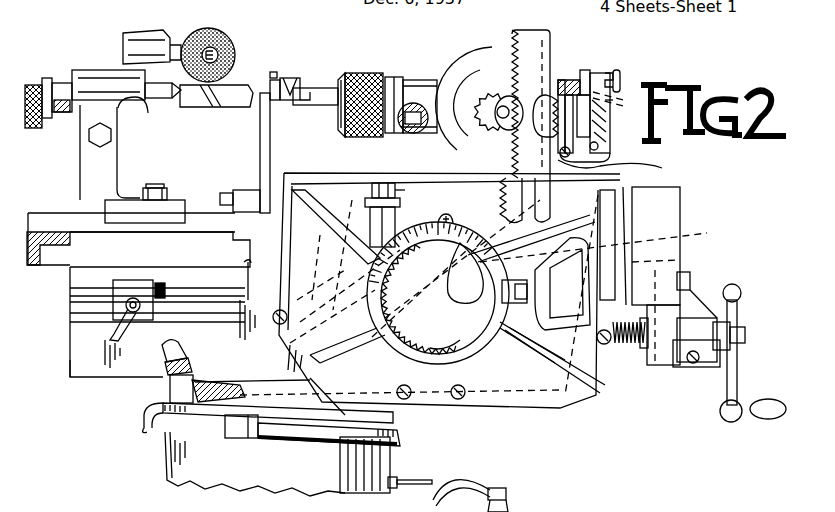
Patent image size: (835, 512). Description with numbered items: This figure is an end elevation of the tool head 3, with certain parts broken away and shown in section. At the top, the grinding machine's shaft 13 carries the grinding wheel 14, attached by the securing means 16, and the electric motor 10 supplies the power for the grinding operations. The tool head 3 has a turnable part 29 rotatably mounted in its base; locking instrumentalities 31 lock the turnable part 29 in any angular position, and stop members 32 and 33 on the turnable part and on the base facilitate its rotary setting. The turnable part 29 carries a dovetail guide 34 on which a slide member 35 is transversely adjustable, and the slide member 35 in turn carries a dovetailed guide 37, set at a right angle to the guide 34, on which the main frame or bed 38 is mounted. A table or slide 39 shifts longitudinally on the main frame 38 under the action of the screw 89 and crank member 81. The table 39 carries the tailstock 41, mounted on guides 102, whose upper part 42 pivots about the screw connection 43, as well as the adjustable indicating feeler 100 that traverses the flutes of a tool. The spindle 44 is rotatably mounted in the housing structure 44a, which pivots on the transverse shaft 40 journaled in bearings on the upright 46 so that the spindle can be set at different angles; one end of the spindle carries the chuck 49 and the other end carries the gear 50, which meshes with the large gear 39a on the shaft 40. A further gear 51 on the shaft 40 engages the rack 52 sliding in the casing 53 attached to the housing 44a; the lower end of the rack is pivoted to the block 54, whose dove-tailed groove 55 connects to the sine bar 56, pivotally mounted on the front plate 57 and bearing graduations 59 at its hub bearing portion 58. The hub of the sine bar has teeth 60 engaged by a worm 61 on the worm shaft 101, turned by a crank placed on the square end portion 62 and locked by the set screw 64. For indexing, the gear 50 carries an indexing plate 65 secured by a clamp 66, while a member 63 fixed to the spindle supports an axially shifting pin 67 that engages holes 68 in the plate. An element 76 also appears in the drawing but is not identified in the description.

The tool head 3 is at (70, 330).
The electric motor 10 is at (623, 504).
The shaft 13 is at (152, 44).
The grinding wheel 14 is at (232, 50).
The securing means 16 is at (218, 50).
The turnable part 29 is at (392, 412).
The locking instrumentalities 31 is at (410, 482).
The stop member 32 is at (145, 432).
The stop member 33 is at (247, 438).
The dovetail guide 34 is at (170, 393).
The slide member 35 is at (463, 426).
The dovetailed guide 37 is at (193, 370).
The main frame or bed 38 is at (70, 372).
The table or slide 39 is at (58, 213).
The gear 39a is at (558, 78).
The shaft 40 is at (495, 108).
The tailstock 41 is at (116, 160).
The upper part of tailstock 42 is at (139, 99).
The screw connection 43 is at (89, 138).
The spindle 44 is at (400, 75).
The housing structure 44a is at (470, 68).
The upright 46 is at (472, 140).
The chuck 49 is at (368, 73).
The gear 50 is at (565, 78).
The gear 51 is at (493, 92).
The rack 52 is at (557, 200).
The casing 53 is at (514, 42).
The block 54 is at (600, 238).
The dove-tailed groove 55 is at (350, 261).
The sine bar 56 is at (332, 289).
The front plate 57 is at (560, 402).
The hub bearing portion 58 is at (465, 335).
The graduations 59 is at (440, 219).
The teeth 60 is at (453, 282).
The worm 61 is at (367, 212).
The square end portion 62 is at (383, 182).
The member 63 is at (619, 104).
The set screw 64 is at (400, 185).
The indexing plate 65 is at (626, 69).
The clamp 66 is at (634, 166).
The pin 67 is at (620, 82).
The holes 68 is at (582, 73).
The clamp screw 76 is at (316, 90).
The crank member 81 is at (738, 314).
The screw 89 is at (633, 347).
The indicating feeler or finger 100 is at (278, 76).
The worm shaft 101 is at (356, 185).
The guides 102 is at (192, 228).